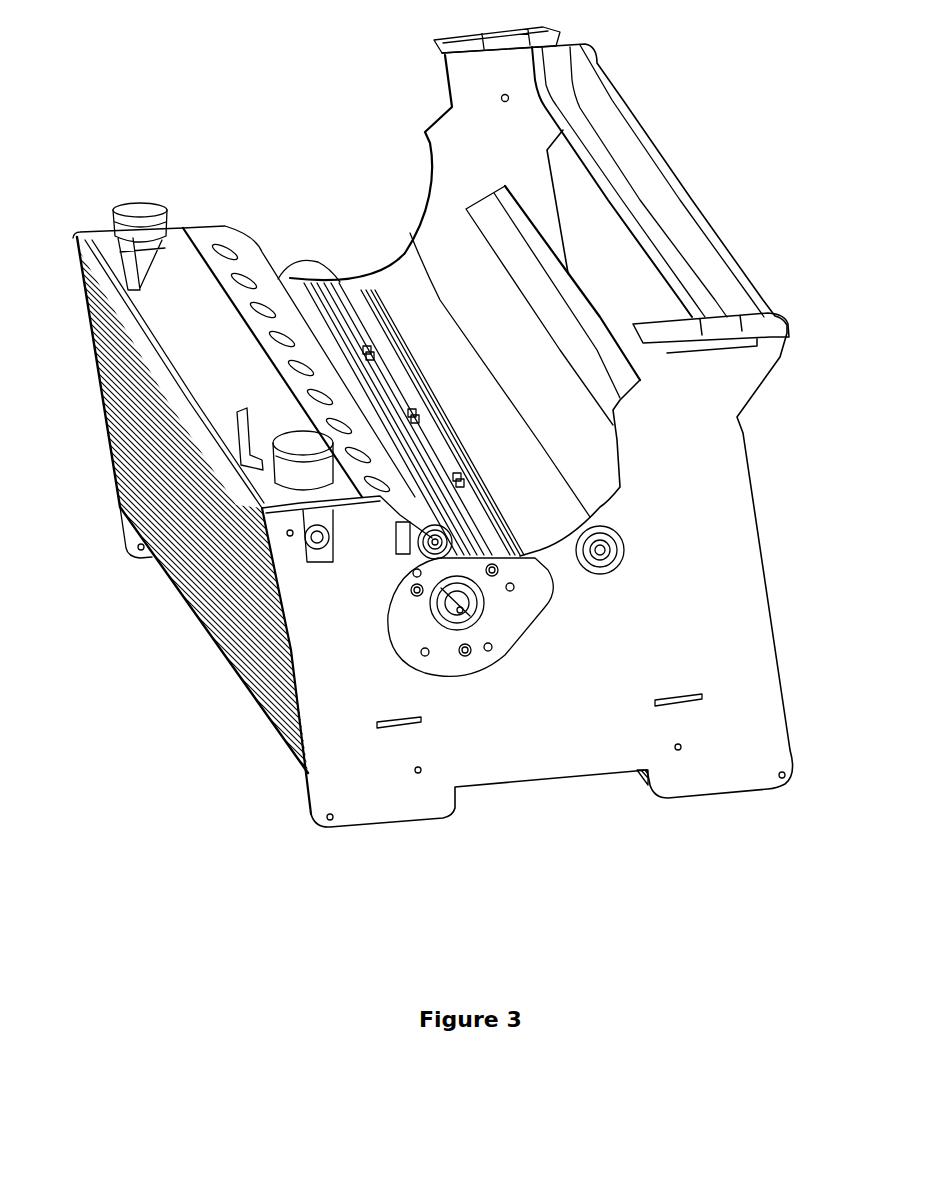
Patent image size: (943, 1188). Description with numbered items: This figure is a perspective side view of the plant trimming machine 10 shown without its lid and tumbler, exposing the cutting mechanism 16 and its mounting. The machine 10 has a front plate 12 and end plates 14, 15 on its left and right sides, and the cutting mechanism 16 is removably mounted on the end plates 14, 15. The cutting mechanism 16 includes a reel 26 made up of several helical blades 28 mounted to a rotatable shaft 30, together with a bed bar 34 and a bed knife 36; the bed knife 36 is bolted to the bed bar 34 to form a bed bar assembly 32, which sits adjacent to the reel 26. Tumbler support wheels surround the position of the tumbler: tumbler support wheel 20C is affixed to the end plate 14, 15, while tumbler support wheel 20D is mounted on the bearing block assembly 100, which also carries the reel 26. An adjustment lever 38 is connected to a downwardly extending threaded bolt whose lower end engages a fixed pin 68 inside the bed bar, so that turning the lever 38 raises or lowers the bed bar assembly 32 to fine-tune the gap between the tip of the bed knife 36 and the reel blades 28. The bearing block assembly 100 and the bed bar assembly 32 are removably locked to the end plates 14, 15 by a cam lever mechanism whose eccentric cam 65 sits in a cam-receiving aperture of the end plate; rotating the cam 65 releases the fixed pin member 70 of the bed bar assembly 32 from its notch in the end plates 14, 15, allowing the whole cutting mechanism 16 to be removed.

The plant trimming machine 10 is at (318, 60).
The front plate 12 is at (226, 600).
The end plate 14 is at (410, 777).
The end plate 15 is at (487, 163).
The cutting mechanism 16 is at (272, 206).
The tumbler support wheel 20C is at (602, 560).
The tumbler support wheel 20D is at (418, 544).
The reel 26 is at (318, 255).
The helical blades 28 is at (403, 390).
The rotatable shaft 30 is at (457, 612).
The bed bar assembly 32 is at (185, 200).
The bed bar 34 is at (210, 370).
The bed knife 36 is at (233, 288).
The adjustment lever 38 is at (300, 438).
The eccentric cam 65 is at (323, 540).
The fixed pin 68 is at (307, 537).
The fixed pin member 70 is at (420, 536).
The bearing block assembly 100 is at (471, 684).